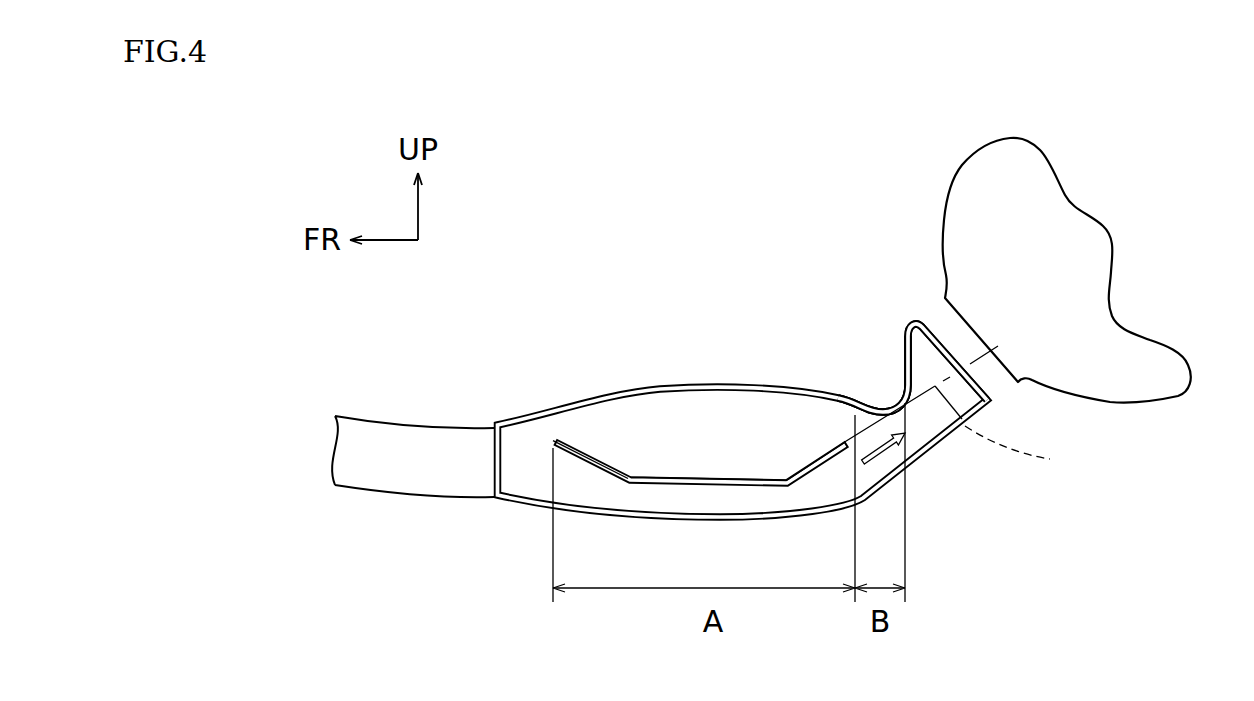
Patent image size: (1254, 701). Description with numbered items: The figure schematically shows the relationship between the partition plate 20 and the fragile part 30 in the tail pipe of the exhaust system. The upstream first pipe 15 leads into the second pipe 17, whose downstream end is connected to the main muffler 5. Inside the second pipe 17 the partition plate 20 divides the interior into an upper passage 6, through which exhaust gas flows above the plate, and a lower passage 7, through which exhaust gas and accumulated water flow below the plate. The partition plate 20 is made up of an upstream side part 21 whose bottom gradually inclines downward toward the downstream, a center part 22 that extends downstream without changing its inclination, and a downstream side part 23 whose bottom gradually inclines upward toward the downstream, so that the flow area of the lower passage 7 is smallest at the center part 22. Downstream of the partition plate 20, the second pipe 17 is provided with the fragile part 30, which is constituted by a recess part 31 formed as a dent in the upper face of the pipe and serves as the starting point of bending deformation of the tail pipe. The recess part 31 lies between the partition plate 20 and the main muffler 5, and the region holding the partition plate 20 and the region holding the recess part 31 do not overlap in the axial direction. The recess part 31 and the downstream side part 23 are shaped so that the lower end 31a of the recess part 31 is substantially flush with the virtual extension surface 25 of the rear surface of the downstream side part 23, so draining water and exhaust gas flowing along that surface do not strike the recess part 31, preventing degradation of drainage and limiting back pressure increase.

The main muffler 5 is at (960, 285).
The upper passage 6 is at (740, 453).
The lower passage 7 is at (727, 505).
The first pipe 15 is at (448, 478).
The second pipe 17 is at (557, 399).
The partition plate 20 is at (721, 469).
The upstream side part 21 is at (586, 443).
The center part 22 is at (667, 478).
The downstream side part 23 is at (815, 459).
The virtual extension surface 25 is at (964, 412).
The fragile part 30 is at (873, 374).
The recess part 31 is at (878, 404).
The lower end 31a is at (905, 405).